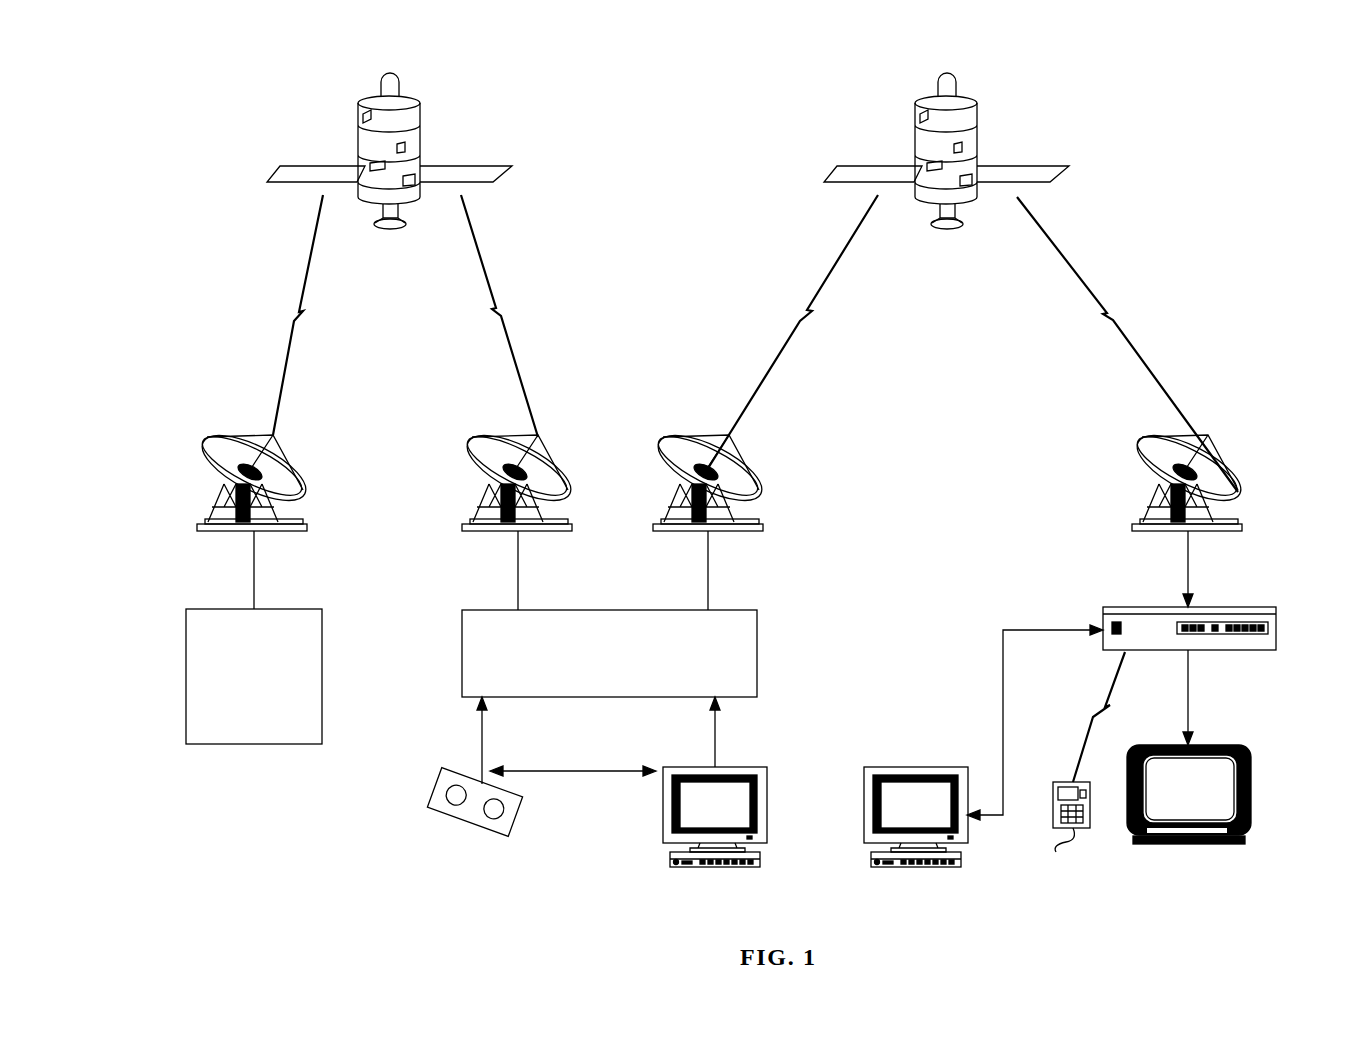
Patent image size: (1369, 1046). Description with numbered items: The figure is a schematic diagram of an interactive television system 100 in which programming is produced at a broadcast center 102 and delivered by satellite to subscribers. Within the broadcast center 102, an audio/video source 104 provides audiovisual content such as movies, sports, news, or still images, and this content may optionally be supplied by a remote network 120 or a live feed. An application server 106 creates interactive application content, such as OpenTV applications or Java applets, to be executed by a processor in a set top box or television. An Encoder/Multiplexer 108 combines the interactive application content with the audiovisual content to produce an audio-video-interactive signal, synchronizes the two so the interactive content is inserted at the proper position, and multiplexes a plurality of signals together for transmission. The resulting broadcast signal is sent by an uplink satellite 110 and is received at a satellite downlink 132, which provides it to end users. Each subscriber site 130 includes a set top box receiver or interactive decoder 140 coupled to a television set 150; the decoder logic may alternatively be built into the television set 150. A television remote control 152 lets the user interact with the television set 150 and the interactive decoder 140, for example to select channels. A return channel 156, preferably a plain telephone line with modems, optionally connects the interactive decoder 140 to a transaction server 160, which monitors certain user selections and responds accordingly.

The interactive television system 100 is at (1182, 133).
The broadcast center 102 is at (485, 888).
The audio/video source 104 is at (432, 797).
The application server 106 is at (768, 818).
The Encoder/Multiplexer 108 is at (758, 652).
The uplink satellite 110 is at (760, 472).
The remote network 120 is at (322, 672).
The subscriber site 130 is at (1095, 405).
The satellite downlink 132 is at (1237, 473).
The set top box receiver or interactive decoder 140 is at (1277, 630).
The television set 150 is at (1255, 795).
The television remote control 152 is at (1088, 768).
The return channel 156 is at (1012, 627).
The transaction server 160 is at (908, 764).